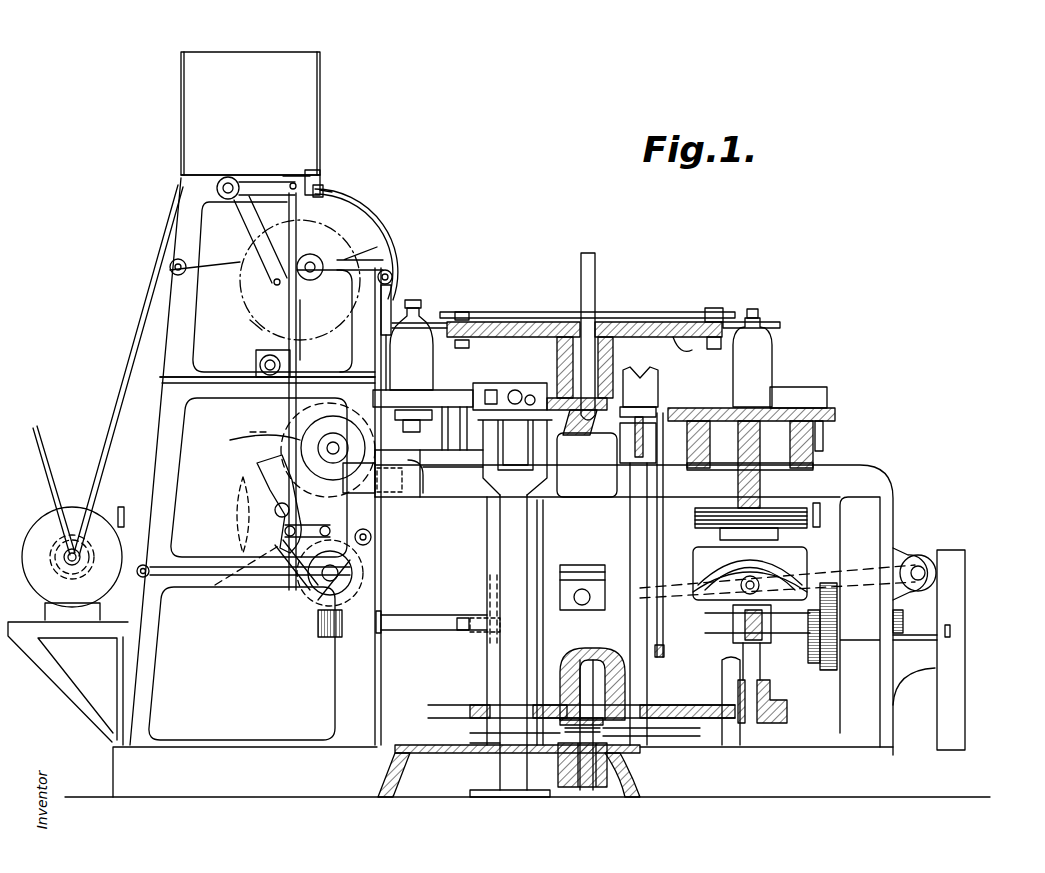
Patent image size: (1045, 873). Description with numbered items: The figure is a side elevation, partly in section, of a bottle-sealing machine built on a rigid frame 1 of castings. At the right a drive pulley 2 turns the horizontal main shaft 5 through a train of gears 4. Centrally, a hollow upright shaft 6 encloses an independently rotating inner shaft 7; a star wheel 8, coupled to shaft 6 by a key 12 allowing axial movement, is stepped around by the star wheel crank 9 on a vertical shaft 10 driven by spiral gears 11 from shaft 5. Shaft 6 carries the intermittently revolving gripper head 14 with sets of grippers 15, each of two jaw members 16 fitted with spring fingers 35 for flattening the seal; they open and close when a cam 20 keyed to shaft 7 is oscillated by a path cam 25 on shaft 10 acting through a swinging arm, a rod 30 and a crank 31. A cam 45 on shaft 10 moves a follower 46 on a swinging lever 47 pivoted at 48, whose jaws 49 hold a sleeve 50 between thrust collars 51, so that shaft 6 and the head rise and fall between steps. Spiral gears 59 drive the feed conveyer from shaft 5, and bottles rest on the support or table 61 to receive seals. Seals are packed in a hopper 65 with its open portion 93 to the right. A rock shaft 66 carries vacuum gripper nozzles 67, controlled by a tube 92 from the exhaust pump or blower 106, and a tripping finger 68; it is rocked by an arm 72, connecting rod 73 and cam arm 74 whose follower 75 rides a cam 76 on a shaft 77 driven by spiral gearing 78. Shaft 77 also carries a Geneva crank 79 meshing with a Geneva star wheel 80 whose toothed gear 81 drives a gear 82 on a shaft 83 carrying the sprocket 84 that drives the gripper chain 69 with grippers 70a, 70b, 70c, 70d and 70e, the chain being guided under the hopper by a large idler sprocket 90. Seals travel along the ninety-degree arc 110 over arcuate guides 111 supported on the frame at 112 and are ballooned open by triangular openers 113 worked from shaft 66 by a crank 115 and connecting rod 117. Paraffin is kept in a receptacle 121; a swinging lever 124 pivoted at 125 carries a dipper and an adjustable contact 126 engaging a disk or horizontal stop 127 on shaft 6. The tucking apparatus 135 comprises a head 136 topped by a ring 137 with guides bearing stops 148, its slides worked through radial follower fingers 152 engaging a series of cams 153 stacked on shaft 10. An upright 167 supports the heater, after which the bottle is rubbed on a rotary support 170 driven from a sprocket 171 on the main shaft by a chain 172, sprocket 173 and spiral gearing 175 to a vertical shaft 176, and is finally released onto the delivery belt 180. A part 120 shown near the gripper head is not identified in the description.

The frame 1 is at (160, 425).
The drive pulley 2 is at (966, 615).
The train of gears 4 is at (818, 680).
The main shaft 5 is at (428, 626).
The hollow upright shaft 6 is at (562, 622).
The inner shaft 7 is at (598, 278).
The star wheel 8 is at (458, 704).
The star wheel crank 9 is at (770, 716).
The vertical shaft 10 is at (760, 662).
The spiral gears 11 is at (763, 636).
The key 12 is at (605, 682).
The gripper head 14 is at (680, 337).
The grippers 15 is at (430, 325).
The jaw members 16 is at (772, 328).
The cam 20 is at (665, 322).
The path cam 25 is at (790, 722).
The rod 30 is at (690, 737).
The crank 31 is at (565, 742).
The spring fingers 35 is at (755, 308).
The cam 45 is at (700, 558).
The follower 46 is at (790, 578).
The swinging lever 47 is at (875, 560).
The pivot 48 is at (920, 570).
The jaws 49 is at (580, 597).
The sleeve 50 is at (575, 580).
The thrust collars 51 is at (525, 670).
The spiral gears 59 is at (488, 630).
The support or table 61 is at (425, 418).
The hopper 65 is at (181, 122).
The rock shaft 66 is at (217, 188).
The vacuum gripper nozzles 67 is at (316, 178).
The tripping finger 68 is at (332, 192).
The gripper chain 69 is at (245, 295).
The gripper 70a is at (324, 190).
The gripper 70b is at (392, 303).
The gripper 70c is at (378, 497).
The gripper 70d is at (270, 432).
The gripper 70e is at (258, 323).
The arm 72 is at (268, 185).
The connecting rod 73 is at (315, 330).
The cam arm 74 is at (288, 580).
The follower 75 is at (318, 590).
The cam 76 is at (318, 610).
The shaft 77 is at (372, 562).
The spiral gearing 78 is at (330, 637).
The Geneva crank 79 is at (250, 585).
The Geneva star wheel 80 is at (250, 476).
The toothed gear 81 is at (243, 485).
The gear 82 is at (300, 430).
The shaft 83 is at (300, 405).
The sprocket 84 is at (328, 437).
The idler sprocket 90 is at (235, 275).
The tube 92 is at (165, 245).
The open portion of hopper 93 is at (290, 172).
The exhaust pump or blower 106 is at (105, 548).
The arc 110 is at (378, 222).
The arcuate guides 111 is at (364, 206).
The guide support 112 is at (340, 270).
The triangular openers 113 is at (393, 285).
The crank 115 is at (250, 222).
The connecting rod 117 is at (252, 292).
The plate 120 is at (640, 313).
The receptacle 121 is at (440, 395).
The swinging lever 124 is at (480, 392).
The pivot 125 is at (520, 391).
The adjustable contact 126 is at (568, 437).
The disk or horizontal stop 127 is at (512, 392).
The tucking apparatus 135 is at (823, 432).
The head 136 is at (830, 410).
The ring 137 is at (812, 390).
The stop 148 is at (750, 440).
The radial follower finger 152 is at (855, 560).
The cams 153 is at (775, 520).
The upright 167 is at (730, 740).
The rotary support 170 is at (660, 380).
The sprocket 171 is at (665, 645).
The chain 172 is at (616, 520).
The sprocket 173 is at (665, 405).
The spiral gearing 175 is at (650, 470).
The vertical shaft 176 is at (650, 503).
The delivery belt 180 is at (540, 425).